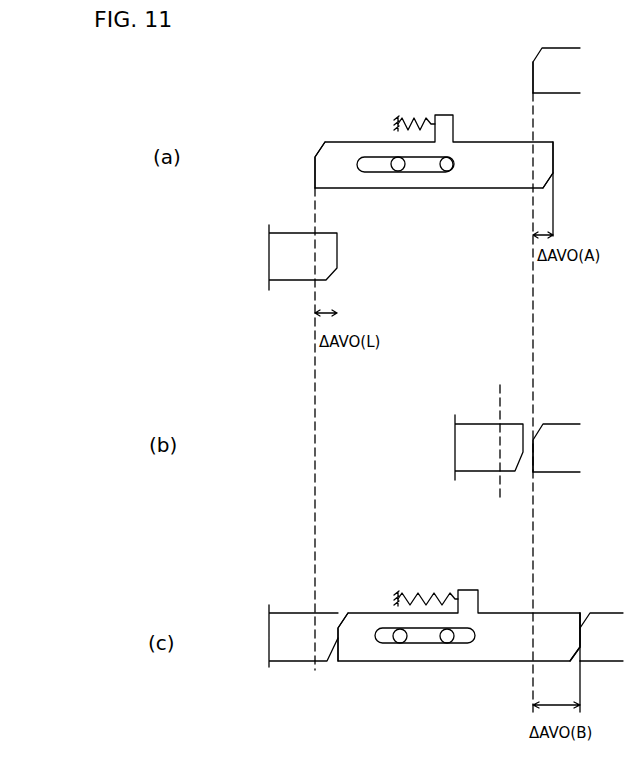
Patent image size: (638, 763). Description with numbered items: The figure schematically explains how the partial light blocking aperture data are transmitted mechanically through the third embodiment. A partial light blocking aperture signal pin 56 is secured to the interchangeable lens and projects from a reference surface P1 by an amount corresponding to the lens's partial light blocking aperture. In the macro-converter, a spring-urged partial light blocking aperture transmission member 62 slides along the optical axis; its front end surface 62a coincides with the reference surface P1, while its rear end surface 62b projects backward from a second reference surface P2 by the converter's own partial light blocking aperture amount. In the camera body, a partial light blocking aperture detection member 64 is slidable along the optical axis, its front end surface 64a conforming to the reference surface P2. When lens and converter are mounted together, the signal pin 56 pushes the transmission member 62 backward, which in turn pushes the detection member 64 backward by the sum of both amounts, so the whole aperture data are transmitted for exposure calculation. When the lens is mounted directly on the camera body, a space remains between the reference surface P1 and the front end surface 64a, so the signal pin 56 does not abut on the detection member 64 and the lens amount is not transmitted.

The partial light blocking aperture signal pin 56 is at (290, 270).
The partial light blocking aperture transmission member 62 is at (470, 182).
The front end surface 62a is at (315, 173).
The rear end surface 62b is at (555, 157).
The partial light blocking aperture detection member 64 is at (568, 66).
The front end surface 64a is at (533, 78).
The reference surface P1 is at (315, 402).
The reference surface P2 is at (530, 118).